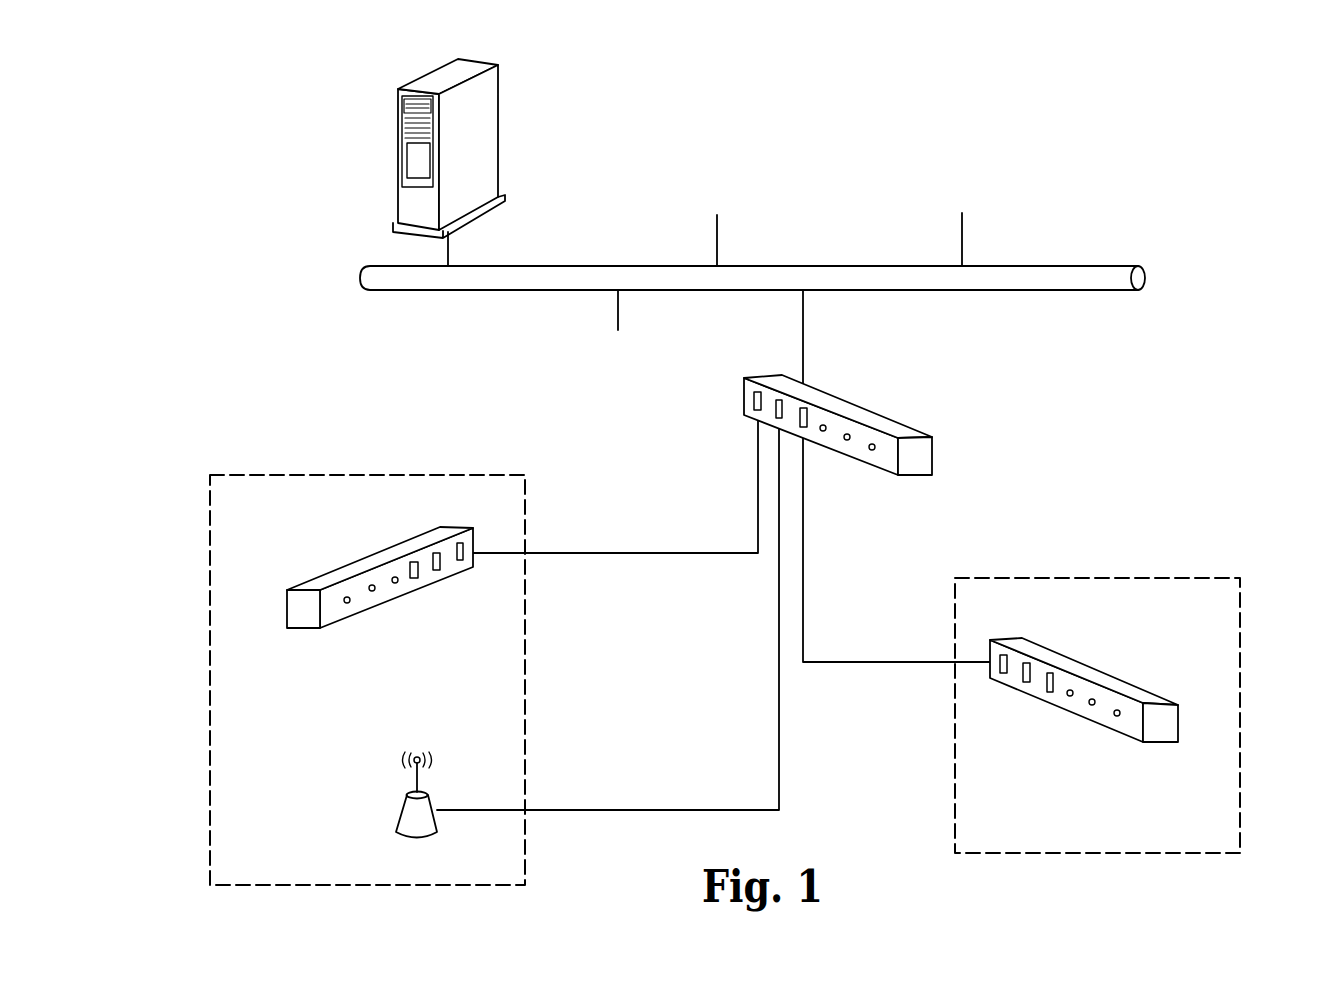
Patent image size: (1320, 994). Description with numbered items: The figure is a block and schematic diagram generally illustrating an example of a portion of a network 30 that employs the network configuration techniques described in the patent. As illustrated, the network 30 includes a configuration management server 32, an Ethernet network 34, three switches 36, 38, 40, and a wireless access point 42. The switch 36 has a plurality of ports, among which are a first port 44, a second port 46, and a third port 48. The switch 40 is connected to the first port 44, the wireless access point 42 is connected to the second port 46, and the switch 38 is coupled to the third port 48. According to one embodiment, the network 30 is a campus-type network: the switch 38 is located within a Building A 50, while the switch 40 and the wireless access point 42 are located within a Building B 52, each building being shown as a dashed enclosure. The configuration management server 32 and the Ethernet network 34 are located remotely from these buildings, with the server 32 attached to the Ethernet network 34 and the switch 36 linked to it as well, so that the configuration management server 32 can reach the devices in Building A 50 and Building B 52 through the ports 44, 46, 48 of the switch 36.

The network 30 is at (1116, 91).
The configuration management server 32 is at (437, 79).
The Ethernet network 34 is at (1040, 240).
The switch 36 is at (933, 457).
The switch 38 is at (1113, 733).
The switch 40 is at (333, 620).
The wireless access point 42 is at (432, 803).
The first port 44 is at (745, 404).
The second port 46 is at (779, 400).
The third port 48 is at (807, 427).
The Building A 50 is at (1170, 853).
The Building B 52 is at (400, 885).